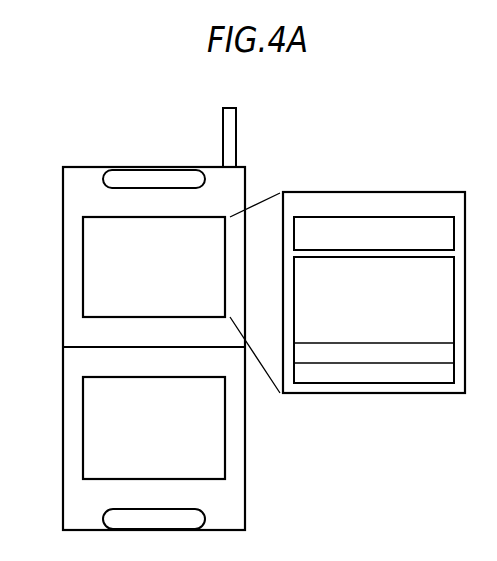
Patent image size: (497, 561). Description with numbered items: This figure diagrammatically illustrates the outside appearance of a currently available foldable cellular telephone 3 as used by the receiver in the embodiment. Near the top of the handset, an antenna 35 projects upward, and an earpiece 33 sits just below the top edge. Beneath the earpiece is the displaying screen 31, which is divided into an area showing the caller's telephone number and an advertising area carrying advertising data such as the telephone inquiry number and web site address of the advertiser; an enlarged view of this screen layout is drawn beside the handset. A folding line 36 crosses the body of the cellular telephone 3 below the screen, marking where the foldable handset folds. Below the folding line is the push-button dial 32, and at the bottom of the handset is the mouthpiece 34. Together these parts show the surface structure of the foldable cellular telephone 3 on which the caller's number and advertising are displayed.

The cellular telephone 3 is at (83, 167).
The displaying screen 31 is at (82, 253).
The push-button dial 32 is at (225, 447).
The earpiece 33 is at (100, 178).
The mouthpiece 34 is at (205, 520).
The antenna 35 is at (237, 123).
The folding line 36 is at (80, 347).